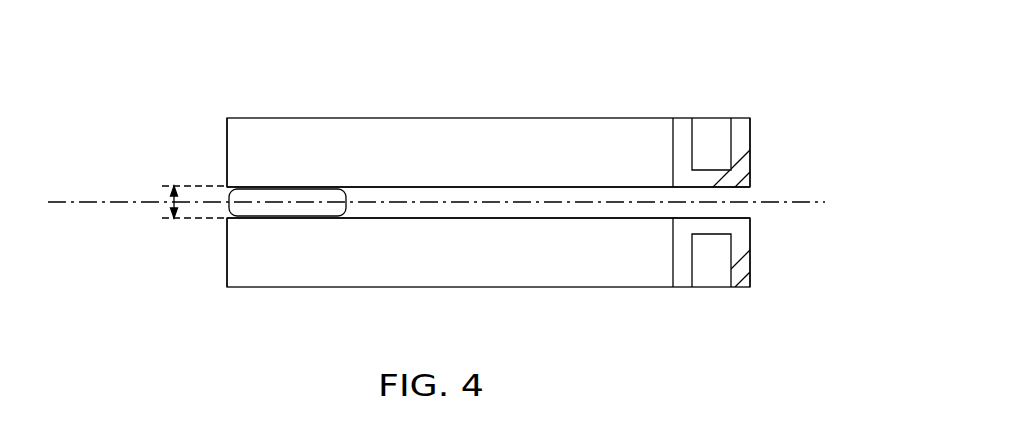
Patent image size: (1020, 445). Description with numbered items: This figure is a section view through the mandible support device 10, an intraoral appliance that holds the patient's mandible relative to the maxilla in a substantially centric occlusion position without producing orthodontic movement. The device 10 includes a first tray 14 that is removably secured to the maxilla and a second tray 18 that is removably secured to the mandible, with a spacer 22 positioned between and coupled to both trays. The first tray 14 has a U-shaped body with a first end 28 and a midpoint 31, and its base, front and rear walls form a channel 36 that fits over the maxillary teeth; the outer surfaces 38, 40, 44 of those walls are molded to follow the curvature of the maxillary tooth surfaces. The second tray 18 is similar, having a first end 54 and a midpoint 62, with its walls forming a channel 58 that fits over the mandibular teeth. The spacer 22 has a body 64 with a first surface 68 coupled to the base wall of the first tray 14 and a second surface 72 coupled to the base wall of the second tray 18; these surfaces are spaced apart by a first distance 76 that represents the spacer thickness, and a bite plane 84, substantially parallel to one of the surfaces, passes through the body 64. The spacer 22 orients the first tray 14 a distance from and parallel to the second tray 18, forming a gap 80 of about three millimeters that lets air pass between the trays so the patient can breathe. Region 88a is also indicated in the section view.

The mandible support device 10 is at (764, 66).
The first tray 14 is at (558, 140).
The second tray 18 is at (522, 268).
The spacer 22 is at (262, 197).
The first end 28 is at (224, 144).
The midpoint 31 is at (751, 146).
The channel 36 is at (715, 131).
The outer surface 38 is at (455, 207).
The outer surface 40 is at (760, 175).
The outer surface 44 is at (663, 165).
The first end 54 is at (224, 252).
The channel 58 is at (714, 266).
The midpoint 62 is at (751, 245).
The body 64 is at (312, 208).
The first surface 68 is at (290, 176).
The second surface 72 is at (276, 227).
The first distance 76 is at (172, 204).
The gap 80 is at (765, 212).
The bite plane 84 is at (74, 208).
The sensing region 88a is at (328, 196).